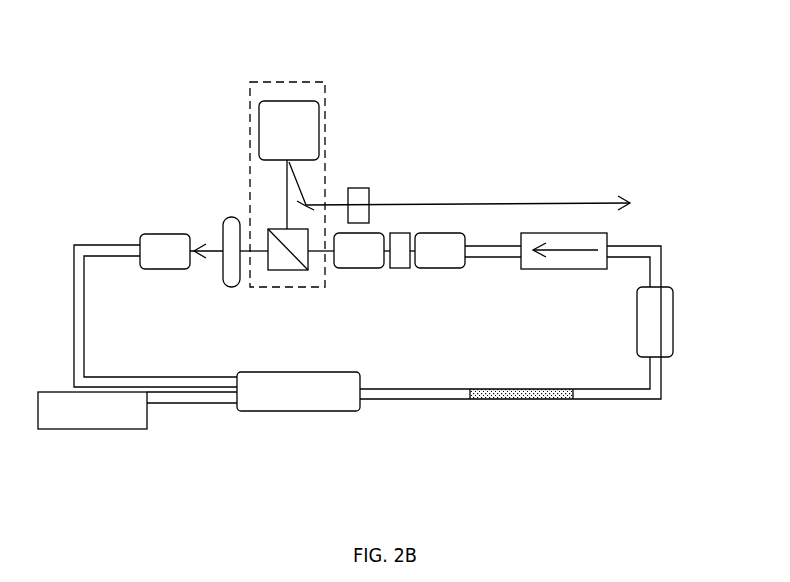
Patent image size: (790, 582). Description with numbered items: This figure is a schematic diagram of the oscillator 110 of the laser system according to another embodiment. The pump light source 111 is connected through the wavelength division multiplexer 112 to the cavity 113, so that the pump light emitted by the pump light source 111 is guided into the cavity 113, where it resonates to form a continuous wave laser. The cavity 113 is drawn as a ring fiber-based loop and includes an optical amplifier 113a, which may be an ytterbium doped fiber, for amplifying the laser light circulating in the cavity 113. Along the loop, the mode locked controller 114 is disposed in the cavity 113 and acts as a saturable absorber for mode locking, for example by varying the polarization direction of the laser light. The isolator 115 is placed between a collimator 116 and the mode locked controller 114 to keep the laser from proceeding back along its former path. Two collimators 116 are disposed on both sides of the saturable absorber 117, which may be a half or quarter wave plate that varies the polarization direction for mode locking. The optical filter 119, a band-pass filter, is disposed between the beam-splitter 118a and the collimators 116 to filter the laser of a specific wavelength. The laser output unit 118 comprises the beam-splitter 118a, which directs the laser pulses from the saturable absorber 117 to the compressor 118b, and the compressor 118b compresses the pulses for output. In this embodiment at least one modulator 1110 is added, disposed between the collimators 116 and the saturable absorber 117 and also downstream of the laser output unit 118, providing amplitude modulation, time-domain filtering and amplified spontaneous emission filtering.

The oscillator 110 is at (84, 44).
The pump light source 111 is at (102, 429).
The wavelength division multiplexer 112 is at (270, 412).
The cavity 113 is at (628, 399).
The optical amplifier 113a is at (505, 399).
The mode locked controller 114 is at (673, 318).
The isolator 115 is at (563, 269).
The collimator 116 is at (153, 233).
The saturable absorber 117 is at (361, 269).
The laser output unit 118 is at (314, 72).
The beam-splitter 118a is at (286, 270).
The compressor 118b is at (311, 104).
The optical filter 119 is at (232, 217).
The modulator 1110 is at (358, 187).